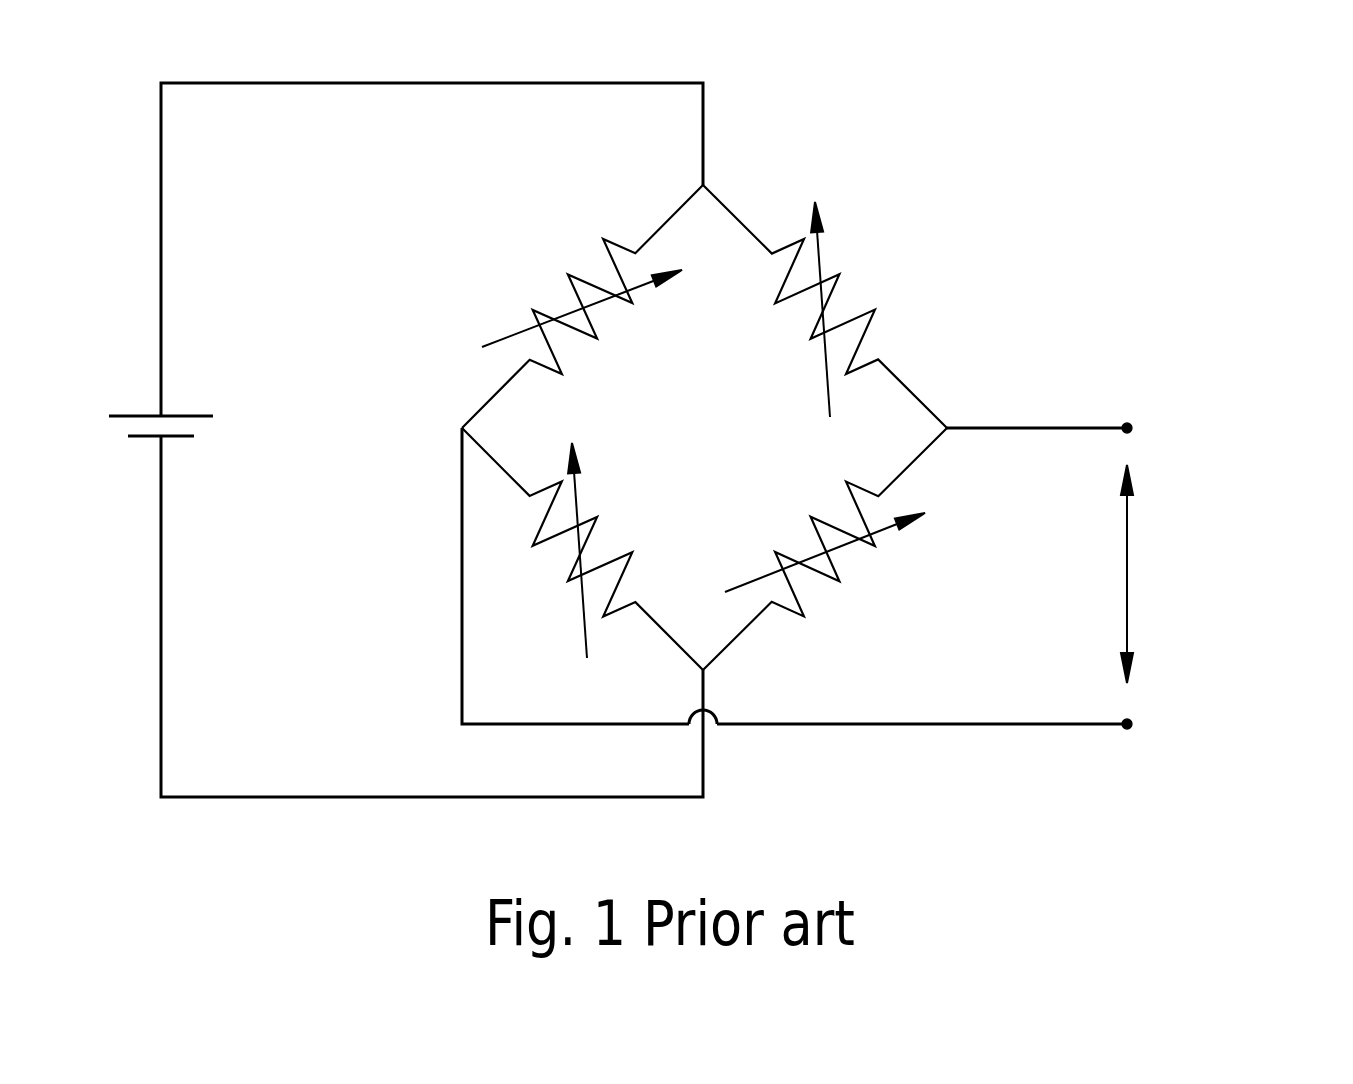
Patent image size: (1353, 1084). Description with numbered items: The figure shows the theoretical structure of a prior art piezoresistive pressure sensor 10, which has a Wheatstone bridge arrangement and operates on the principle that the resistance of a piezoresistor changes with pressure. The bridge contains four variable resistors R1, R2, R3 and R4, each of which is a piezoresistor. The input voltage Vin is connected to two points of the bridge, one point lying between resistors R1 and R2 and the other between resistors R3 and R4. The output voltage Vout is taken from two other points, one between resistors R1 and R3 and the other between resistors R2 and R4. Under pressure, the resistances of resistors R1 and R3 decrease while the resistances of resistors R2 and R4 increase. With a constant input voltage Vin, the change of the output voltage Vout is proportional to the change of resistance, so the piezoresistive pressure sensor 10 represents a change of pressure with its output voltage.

The piezoresistive pressure sensor 10 is at (899, 357).
The variable resistor R1 is at (825, 306).
The variable resistor R2 is at (582, 306).
The variable resistor R3 is at (825, 549).
The variable resistor R4 is at (582, 549).
The input voltage Vin is at (95, 377).
The output voltage Vout is at (1178, 574).